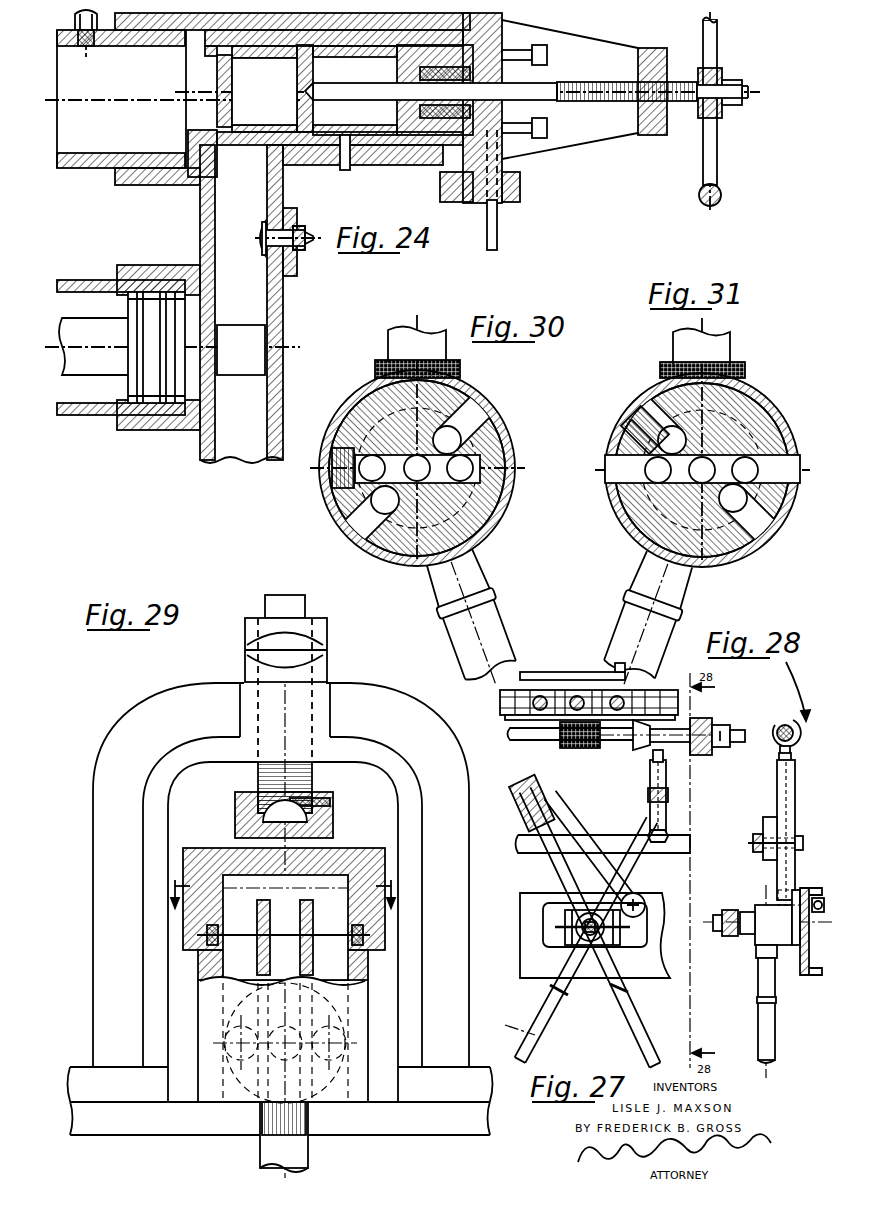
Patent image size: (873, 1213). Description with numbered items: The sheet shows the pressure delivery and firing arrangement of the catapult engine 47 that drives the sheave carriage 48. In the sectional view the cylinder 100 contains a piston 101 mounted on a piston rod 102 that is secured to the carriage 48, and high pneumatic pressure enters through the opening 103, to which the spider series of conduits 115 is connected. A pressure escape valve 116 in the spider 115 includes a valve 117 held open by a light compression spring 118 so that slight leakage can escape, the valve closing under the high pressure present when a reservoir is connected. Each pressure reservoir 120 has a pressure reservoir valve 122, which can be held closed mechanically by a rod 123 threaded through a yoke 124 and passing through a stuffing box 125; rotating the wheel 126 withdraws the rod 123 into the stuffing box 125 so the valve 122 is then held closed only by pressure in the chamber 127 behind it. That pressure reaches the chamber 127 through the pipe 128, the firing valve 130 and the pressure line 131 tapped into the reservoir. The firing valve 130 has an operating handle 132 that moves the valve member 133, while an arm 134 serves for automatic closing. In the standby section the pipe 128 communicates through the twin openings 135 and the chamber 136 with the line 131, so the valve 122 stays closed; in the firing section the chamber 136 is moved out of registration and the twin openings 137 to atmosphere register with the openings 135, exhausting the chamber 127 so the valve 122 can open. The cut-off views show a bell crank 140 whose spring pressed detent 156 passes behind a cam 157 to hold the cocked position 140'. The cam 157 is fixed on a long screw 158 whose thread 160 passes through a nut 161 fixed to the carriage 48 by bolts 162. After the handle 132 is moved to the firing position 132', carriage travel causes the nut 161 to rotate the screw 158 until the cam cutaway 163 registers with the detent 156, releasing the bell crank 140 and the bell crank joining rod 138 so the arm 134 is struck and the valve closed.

In FIG. 24, the catapult engine 47 is at (88, 431).
In FIG. 24, the cylinder 100 is at (77, 283).
In FIG. 24, the piston 101 is at (128, 308).
In FIG. 24, the piston rod 102 is at (108, 366).
In FIG. 24, the opening 103 is at (212, 368).
In FIG. 24, the spider series of conduits 115 is at (283, 344).
In FIG. 24, the pressure escape valve 116 is at (300, 260).
In FIG. 24, the valve 117 is at (260, 241).
In FIG. 24, the light compression spring 118 is at (298, 230).
In FIG. 24, the pressure reservoir 120 is at (78, 162).
In FIG. 24, the pressure reservoir valve 122 is at (256, 140).
In FIG. 24, the rod 123 is at (548, 80).
In FIG. 24, the yoke 124 is at (672, 116).
In FIG. 24, the stuffing box 125 is at (470, 34).
In FIG. 24, the wheel 126 is at (722, 195).
In FIG. 24, the chamber 127 is at (425, 135).
In FIG. 24, the pipe 128 is at (498, 226).
In FIG. 30, the pipe 128 is at (392, 351).
In FIG. 31, the pipe 128 is at (722, 350).
In FIG. 29, the pipe 128 is at (300, 1071).
In FIG. 30, the firing valve 130 is at (516, 421).
In FIG. 31, the firing valve 130 is at (782, 401).
In FIG. 29, the firing valve 130 is at (134, 697).
In FIG. 24, the pressure line 131 is at (75, 19).
In FIG. 30, the pressure line 131 is at (330, 506).
In FIG. 31, the pressure line 131 is at (620, 536).
In FIG. 29, the pressure line 131 is at (273, 954).
In FIG. 30, the operating handle 132 is at (452, 623).
In FIG. 27, the operating handle 132 is at (597, 927).
In FIG. 28, the operating handle 132 is at (784, 1004).
In FIG. 31, the firing position 132' is at (617, 624).
In FIG. 27, the firing position 132' is at (575, 940).
In FIG. 30, the valve member 133 is at (500, 511).
In FIG. 31, the valve member 133 is at (774, 524).
In FIG. 27, the arm 134 is at (562, 871).
In FIG. 28, the arm 134 is at (762, 885).
In FIG. 30, the twin openings 135 is at (347, 421).
In FIG. 31, the twin openings 135 is at (790, 447).
In FIG. 30, the chamber 136 is at (400, 566).
In FIG. 31, the chamber 136 is at (745, 561).
In FIG. 31, the twin openings 137 is at (786, 482).
In FIG. 27, the bell crank joining rod 138 is at (642, 897).
In FIG. 28, the bell crank joining rod 138 is at (760, 857).
In FIG. 27, the bell crank 140 is at (591, 850).
In FIG. 28, the bell crank 140 is at (802, 830).
In FIG. 27, the cocked position 140' is at (639, 796).
In FIG. 27, the spring pressed detent 156 is at (531, 792).
In FIG. 27, the cam 157 is at (648, 748).
In FIG. 28, the cam 157 is at (790, 751).
In FIG. 27, the long screw 158 is at (722, 728).
In FIG. 27, the thread 160 is at (560, 731).
In FIG. 27, the nut 161 is at (560, 742).
In FIG. 27, the bolts 162 is at (615, 697).
In FIG. 28, the cam cutaway 163 is at (779, 751).
In FIG. 27, the sheave carriage 48 is at (540, 673).